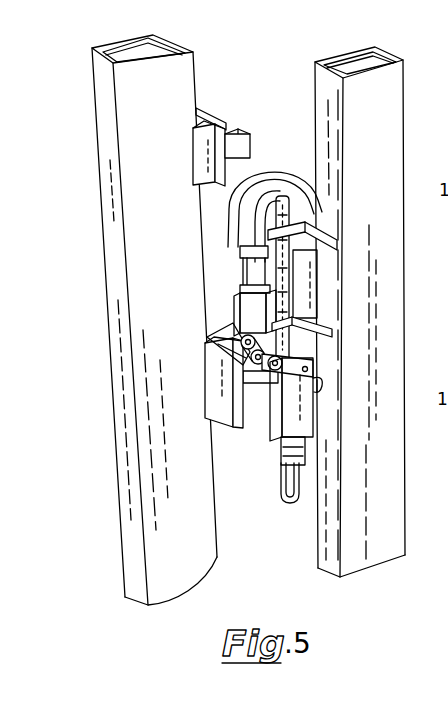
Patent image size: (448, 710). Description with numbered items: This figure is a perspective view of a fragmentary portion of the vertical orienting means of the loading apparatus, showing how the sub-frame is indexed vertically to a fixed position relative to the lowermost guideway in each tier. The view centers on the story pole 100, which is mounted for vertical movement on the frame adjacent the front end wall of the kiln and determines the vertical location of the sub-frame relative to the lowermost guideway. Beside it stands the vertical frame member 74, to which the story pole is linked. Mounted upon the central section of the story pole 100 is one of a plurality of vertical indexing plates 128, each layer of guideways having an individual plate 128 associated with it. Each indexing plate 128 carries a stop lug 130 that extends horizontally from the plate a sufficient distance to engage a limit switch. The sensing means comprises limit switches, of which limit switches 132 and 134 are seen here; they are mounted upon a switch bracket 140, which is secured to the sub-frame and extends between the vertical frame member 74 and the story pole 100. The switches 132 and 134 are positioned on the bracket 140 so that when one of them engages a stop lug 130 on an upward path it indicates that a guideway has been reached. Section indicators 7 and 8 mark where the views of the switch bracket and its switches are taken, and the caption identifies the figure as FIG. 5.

The story pole 100 is at (101, 324).
The frame member 74 is at (385, 142).
The vertical indexing plate 128 is at (220, 400).
The stop lug 130 is at (243, 142).
The limit switch 132 is at (272, 447).
The limit switch 134 is at (270, 412).
The switch bracket 140 is at (337, 265).
The section line 8 is at (206, 100).
The section line 7 is at (211, 305).